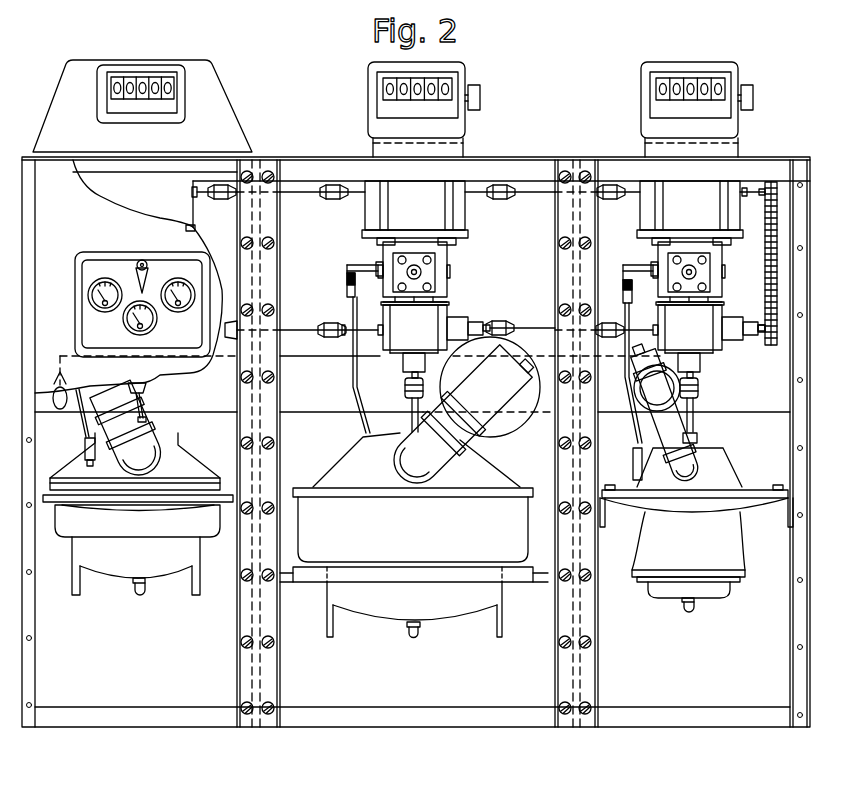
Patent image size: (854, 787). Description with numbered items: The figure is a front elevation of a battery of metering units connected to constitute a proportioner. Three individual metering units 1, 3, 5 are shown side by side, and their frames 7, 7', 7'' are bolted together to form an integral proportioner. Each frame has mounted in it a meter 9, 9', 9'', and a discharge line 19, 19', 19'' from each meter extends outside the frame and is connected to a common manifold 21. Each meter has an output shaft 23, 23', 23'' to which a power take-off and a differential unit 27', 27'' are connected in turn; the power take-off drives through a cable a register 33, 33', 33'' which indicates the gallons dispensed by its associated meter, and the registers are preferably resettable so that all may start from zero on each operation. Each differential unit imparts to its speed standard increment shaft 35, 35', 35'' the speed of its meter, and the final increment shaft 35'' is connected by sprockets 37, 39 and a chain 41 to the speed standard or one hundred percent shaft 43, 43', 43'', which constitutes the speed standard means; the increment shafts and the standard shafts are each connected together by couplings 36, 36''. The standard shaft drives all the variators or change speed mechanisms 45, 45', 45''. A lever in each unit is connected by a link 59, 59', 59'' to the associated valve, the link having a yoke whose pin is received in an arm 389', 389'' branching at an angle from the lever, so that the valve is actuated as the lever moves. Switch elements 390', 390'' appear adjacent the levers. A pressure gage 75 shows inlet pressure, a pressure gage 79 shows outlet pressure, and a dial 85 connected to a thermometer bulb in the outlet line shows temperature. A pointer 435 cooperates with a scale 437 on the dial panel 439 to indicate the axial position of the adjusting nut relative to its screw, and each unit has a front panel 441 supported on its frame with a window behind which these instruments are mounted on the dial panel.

The metering unit 1 is at (214, 161).
The metering unit 3 is at (482, 171).
The metering unit 5 is at (615, 165).
The frame 7 is at (74, 680).
The frame 7' is at (352, 696).
The frame 7'' is at (677, 691).
The meter 9 is at (138, 540).
The meter 9' is at (414, 575).
The meter 9'' is at (696, 559).
The discharge line 19 is at (135, 431).
The discharge line 19' is at (427, 415).
The discharge line 19'' is at (692, 413).
The manifold 21 is at (296, 412).
The output shaft 23 is at (163, 399).
The output shaft 23' is at (393, 411).
The output shaft 23'' is at (722, 417).
The differential unit 27' is at (439, 320).
The differential unit 27'' is at (712, 320).
The register 33 is at (142, 106).
The register 33' is at (444, 109).
The register 33'' is at (715, 95).
The speed standard increment shaft 35 is at (231, 330).
The speed standard increment shaft 35' is at (420, 314).
The speed standard increment shaft 35'' is at (741, 354).
The coupling 36 is at (420, 315).
The coupling 36'' is at (624, 342).
The sprocket 37 is at (780, 346).
The sprocket 39 is at (783, 183).
The chain 41 is at (765, 258).
The speed standard shaft 43 is at (214, 192).
The speed standard shaft 43' is at (417, 208).
The speed standard shaft 43'' is at (681, 210).
The variator 45 is at (205, 207).
The variator 45' is at (439, 215).
The variator 45'' is at (672, 213).
The link 59 is at (72, 419).
The link 59' is at (342, 365).
The link 59'' is at (620, 391).
The pressure gage 75 is at (105, 304).
The pressure gage 79 is at (178, 305).
The dial 85 is at (140, 327).
The arm 389' is at (343, 260).
The arm 389'' is at (631, 262).
The switch 390' is at (323, 285).
The switch 390'' is at (671, 307).
The pointer 435 is at (153, 243).
The scale 437 is at (129, 238).
The dial panel 439 is at (72, 258).
The front panel 441 is at (97, 200).